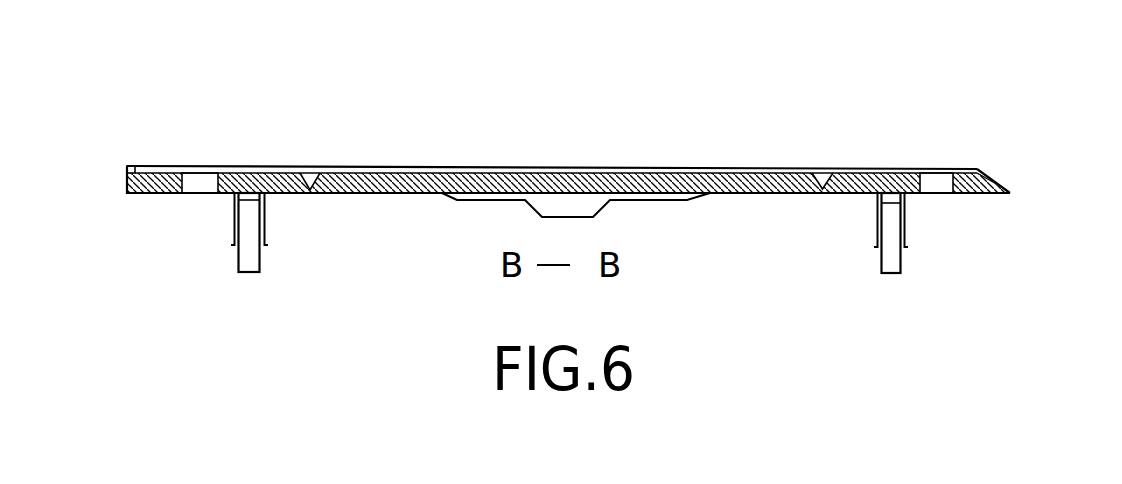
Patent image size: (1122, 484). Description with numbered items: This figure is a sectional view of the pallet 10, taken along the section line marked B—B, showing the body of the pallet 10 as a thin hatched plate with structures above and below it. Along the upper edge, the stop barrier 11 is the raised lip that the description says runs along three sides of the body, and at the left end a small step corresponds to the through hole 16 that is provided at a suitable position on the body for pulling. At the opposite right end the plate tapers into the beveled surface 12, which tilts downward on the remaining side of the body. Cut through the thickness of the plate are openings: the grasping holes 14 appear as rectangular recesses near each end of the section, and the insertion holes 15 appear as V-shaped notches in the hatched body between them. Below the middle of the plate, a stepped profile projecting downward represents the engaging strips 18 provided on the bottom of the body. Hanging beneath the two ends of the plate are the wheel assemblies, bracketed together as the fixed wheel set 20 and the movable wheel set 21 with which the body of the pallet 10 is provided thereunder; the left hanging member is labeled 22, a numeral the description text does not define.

The pallet 10 is at (569, 145).
The stop barrier 11 is at (660, 168).
The beveled surface 12 is at (993, 182).
The grasping holes 14 is at (203, 178).
The insertion holes 15 is at (313, 177).
The through hole 16 is at (127, 169).
The engaging strips 18 is at (600, 207).
The fixed wheel set 20 is at (568, 283).
The movable wheel set 21 is at (912, 266).
The left leg 22 is at (248, 247).